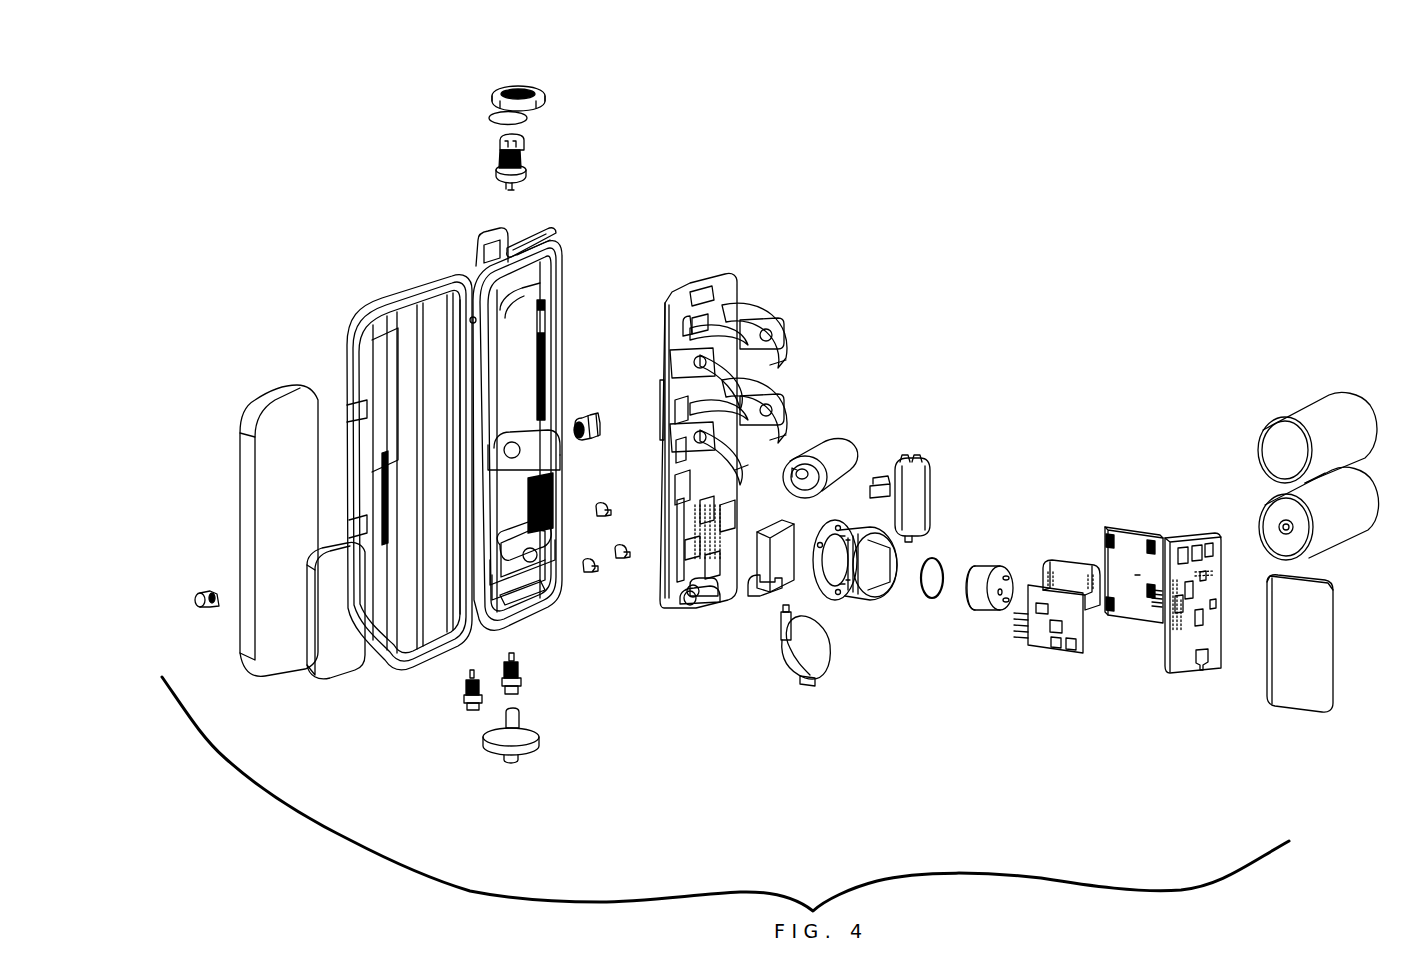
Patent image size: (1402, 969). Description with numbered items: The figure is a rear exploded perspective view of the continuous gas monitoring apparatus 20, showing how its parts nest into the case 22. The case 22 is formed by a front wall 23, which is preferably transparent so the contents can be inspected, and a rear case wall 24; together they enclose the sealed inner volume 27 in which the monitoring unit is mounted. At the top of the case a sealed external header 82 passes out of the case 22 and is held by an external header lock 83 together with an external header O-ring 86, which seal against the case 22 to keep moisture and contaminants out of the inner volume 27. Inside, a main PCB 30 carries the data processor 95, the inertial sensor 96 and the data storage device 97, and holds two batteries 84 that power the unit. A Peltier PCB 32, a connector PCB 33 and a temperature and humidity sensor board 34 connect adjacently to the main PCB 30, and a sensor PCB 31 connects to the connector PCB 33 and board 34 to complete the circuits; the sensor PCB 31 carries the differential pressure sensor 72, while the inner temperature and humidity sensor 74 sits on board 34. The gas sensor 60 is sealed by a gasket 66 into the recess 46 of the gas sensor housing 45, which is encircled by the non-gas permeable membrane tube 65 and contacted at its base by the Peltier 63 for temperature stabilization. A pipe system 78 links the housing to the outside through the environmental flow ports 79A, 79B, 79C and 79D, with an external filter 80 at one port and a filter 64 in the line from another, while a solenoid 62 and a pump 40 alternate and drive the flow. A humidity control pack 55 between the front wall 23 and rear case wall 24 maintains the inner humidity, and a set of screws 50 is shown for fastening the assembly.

The continuous gas monitoring apparatus 20 is at (450, 270).
The case 22 is at (552, 238).
The front wall 23 is at (468, 268).
The rear case wall 24 is at (418, 489).
The inner volume 27 is at (517, 372).
The main PCB 30 is at (727, 272).
The sensor PCB 31 is at (1183, 672).
The Peltier PCB 32 is at (1040, 655).
The connector PCB 33 is at (1057, 558).
The temperature and humidity sensor board 34 is at (1128, 528).
The pump 40 is at (918, 462).
The gas sensor housing 45 is at (860, 600).
The recess 46 is at (881, 572).
The screws 50 is at (603, 520).
The humidity control pack 55 is at (1298, 710).
The gas sensor 60 is at (985, 610).
The solenoid 62 is at (710, 608).
The Peltier 63 is at (760, 593).
The filter 64 is at (832, 436).
The non-gas permeable membrane tube 65 is at (793, 690).
The gasket 66 is at (932, 600).
The differential pressure sensor 72 is at (1204, 664).
The inner temperature and humidity sensor 74 is at (1147, 607).
The pipe system 78 is at (550, 612).
The environmental flow port 79A is at (507, 693).
The environmental flow port 79B is at (590, 413).
The environmental flow port 79C is at (195, 598).
The environmental flow port 79D is at (463, 708).
The external filter 80 is at (510, 760).
The external header 82 is at (500, 140).
The external header lock 83 is at (492, 92).
The batteries 84 is at (1307, 403).
The external header O-ring 86 is at (528, 117).
The data processor 95 is at (663, 322).
The inertial sensor 96 is at (668, 394).
The data storage device 97 is at (737, 367).